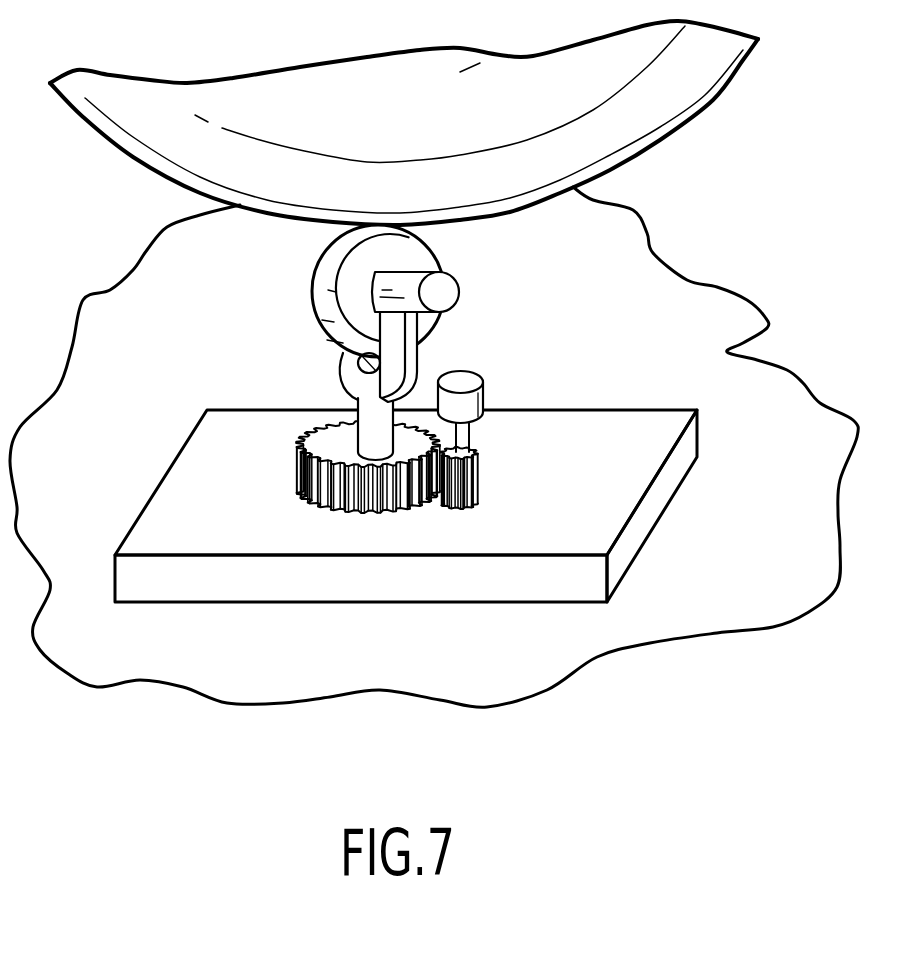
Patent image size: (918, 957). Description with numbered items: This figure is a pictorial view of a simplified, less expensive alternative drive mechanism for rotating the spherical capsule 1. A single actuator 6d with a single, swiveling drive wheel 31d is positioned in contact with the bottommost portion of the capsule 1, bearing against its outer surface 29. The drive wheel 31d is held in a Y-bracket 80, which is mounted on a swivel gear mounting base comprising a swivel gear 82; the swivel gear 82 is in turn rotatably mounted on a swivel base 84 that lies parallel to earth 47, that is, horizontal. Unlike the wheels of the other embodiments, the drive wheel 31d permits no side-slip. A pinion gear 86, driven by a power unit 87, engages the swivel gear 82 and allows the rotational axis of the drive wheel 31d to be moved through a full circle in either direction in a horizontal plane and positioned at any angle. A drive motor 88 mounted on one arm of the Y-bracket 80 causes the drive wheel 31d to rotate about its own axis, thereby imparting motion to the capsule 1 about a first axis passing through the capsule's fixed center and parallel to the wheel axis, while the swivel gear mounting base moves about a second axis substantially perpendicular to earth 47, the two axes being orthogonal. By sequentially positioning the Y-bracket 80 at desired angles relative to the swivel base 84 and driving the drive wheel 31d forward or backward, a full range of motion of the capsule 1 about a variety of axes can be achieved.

The capsule 1 is at (666, 145).
The outer surface 29 is at (555, 192).
The actuator 6d is at (298, 300).
The drive wheel 31d is at (322, 330).
The drive motor 88 is at (408, 278).
The Y-bracket 80 is at (408, 368).
The power unit 87 is at (484, 388).
The pinion gear 86 is at (478, 478).
The swivel gear 82 is at (297, 465).
The swivel base 84 is at (233, 530).
The earth 47 is at (563, 637).